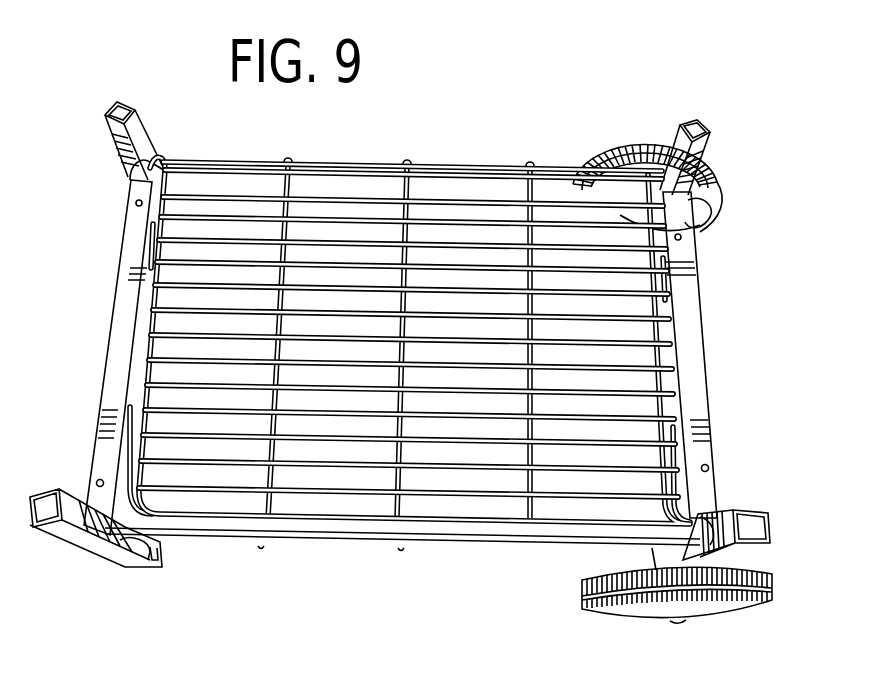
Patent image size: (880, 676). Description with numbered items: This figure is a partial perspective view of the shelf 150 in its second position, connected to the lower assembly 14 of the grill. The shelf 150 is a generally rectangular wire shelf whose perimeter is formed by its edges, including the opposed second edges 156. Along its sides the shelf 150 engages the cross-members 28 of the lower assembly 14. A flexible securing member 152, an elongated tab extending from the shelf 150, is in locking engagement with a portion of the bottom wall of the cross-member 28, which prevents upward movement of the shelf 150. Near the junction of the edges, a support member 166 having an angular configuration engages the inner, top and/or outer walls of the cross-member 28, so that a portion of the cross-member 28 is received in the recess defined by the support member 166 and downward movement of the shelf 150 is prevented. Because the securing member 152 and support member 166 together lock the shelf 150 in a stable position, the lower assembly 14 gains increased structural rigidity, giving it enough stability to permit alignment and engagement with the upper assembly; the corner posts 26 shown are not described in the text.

The lower assembly 14 is at (738, 337).
The corner post 26 is at (153, 152).
The cross-member 28 is at (116, 362).
The shelf 150 is at (524, 141).
The securing member 152 is at (150, 264).
The second edge 156 is at (440, 166).
The support member 166 is at (125, 173).